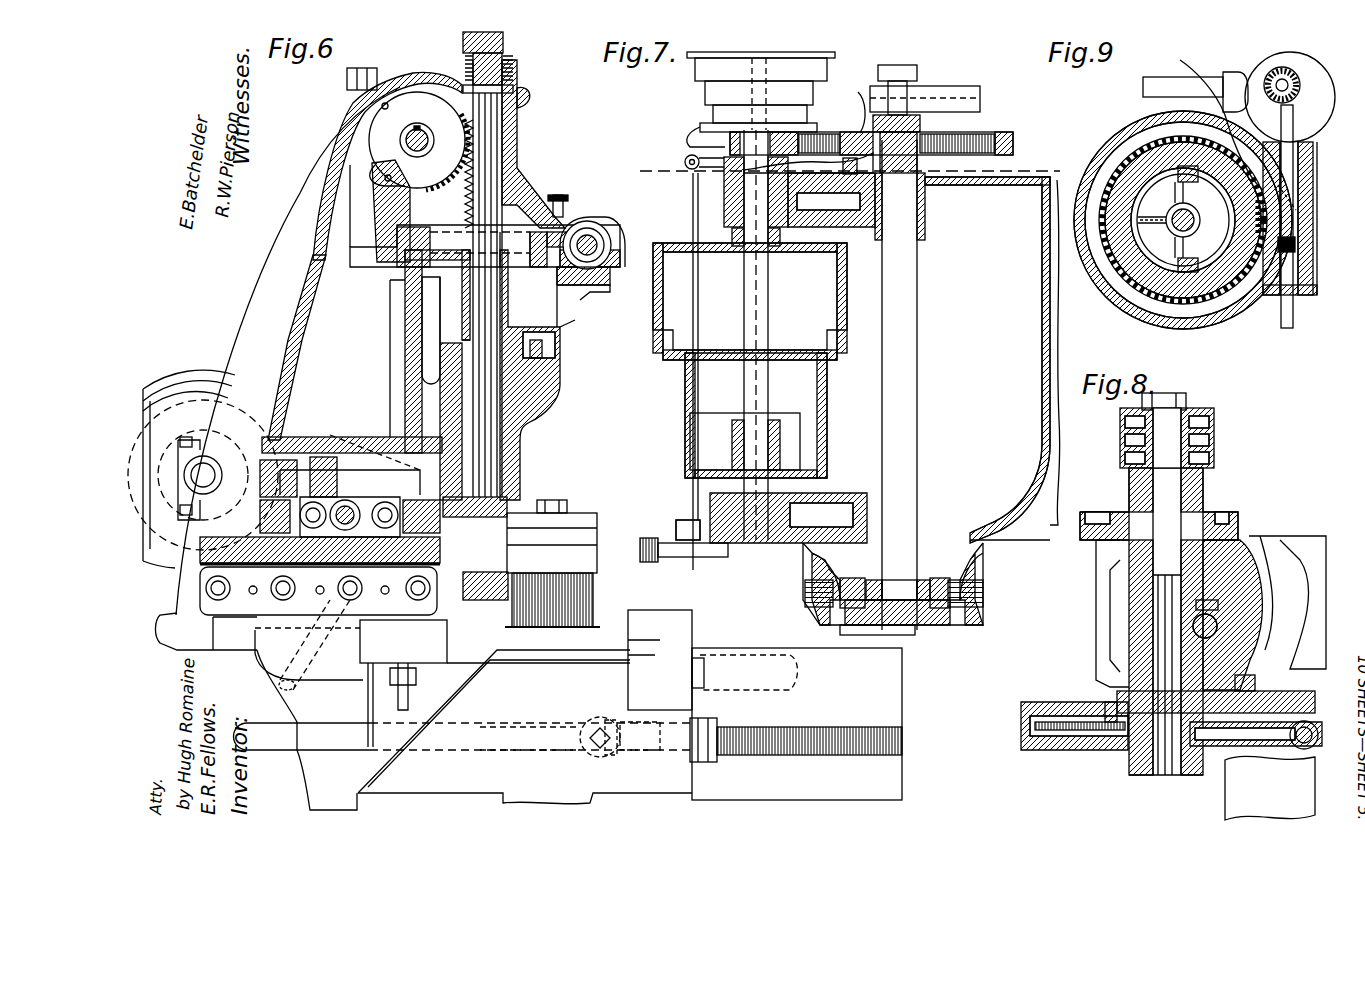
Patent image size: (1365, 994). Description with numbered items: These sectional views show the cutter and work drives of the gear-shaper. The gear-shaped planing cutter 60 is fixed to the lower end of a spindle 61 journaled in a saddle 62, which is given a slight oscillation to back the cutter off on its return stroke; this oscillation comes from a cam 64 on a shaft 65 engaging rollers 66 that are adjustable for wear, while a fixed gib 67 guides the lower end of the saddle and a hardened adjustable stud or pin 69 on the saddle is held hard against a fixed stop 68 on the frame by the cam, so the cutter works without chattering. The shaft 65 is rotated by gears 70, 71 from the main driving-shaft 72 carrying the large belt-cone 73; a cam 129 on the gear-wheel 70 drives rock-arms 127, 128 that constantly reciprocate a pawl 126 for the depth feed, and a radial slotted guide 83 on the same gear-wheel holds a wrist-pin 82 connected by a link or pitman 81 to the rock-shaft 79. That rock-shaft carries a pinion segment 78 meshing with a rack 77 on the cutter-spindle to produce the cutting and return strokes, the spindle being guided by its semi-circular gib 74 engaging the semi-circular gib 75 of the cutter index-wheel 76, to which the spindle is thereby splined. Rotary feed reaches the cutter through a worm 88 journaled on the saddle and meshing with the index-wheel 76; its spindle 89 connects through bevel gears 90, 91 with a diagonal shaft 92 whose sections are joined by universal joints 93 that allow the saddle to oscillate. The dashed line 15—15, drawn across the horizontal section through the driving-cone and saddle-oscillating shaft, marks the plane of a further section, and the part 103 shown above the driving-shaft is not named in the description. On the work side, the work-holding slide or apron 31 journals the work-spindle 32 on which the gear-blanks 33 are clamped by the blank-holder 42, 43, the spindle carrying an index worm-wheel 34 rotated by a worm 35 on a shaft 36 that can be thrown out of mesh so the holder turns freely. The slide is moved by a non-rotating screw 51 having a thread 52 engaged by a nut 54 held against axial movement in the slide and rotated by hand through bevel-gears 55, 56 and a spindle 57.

In FIG. 7, the section line 15 is at (652, 163).
In FIG. 6, the work-holding slide or apron 31 is at (660, 625).
In FIG. 8, the work-holding slide or apron 31 is at (1098, 622).
In FIG. 8, the work-spindle 32 is at (1170, 520).
In FIG. 6, the gear-blanks 33 is at (595, 520).
In FIG. 8, the gear-blanks 33 is at (1212, 428).
In FIG. 8, the index worm-wheel 34 is at (1055, 738).
In FIG. 8, the worm 35 is at (1304, 752).
In FIG. 8, the shaft 36 is at (1300, 715).
In FIG. 8, the blank-holder 42 is at (1128, 488).
In FIG. 6, the blank-holder 43 is at (552, 498).
In FIG. 8, the blank-holder 43 is at (1178, 396).
In FIG. 6, the non-rotating screw 51 is at (293, 748).
In FIG. 6, the thread 52 is at (800, 752).
In FIG. 6, the nut 54 is at (650, 760).
In FIG. 6, the bevel-gear 55 is at (616, 718).
In FIG. 6, the bevel-gear 56 is at (590, 728).
In FIG. 6, the spindle 57 is at (592, 748).
In FIG. 6, the gear-shaped planing cutter 60 is at (560, 553).
In FIG. 6, the cutter-spindle 61 is at (520, 445).
In FIG. 6, the saddle 62 is at (252, 290).
In FIG. 6, the cam 64 is at (355, 500).
In FIG. 6, the shaft 65 is at (343, 500).
In FIG. 7, the shaft 65 is at (900, 337).
In FIG. 6, the rollers 66 is at (325, 540).
In FIG. 7, the rollers 66 is at (805, 588).
In FIG. 6, the fixed gib 67 is at (440, 585).
In FIG. 6, the fixed stop 68 is at (300, 440).
In FIG. 6, the adjustable stud or pin 69 is at (283, 355).
In FIG. 7, the gear 70 is at (990, 132).
In FIG. 7, the gear 71 is at (698, 128).
In FIG. 7, the main driving-shaft 72 is at (745, 272).
In FIG. 7, the belt-cone 73 is at (683, 385).
In FIG. 6, the semi-circular gib 74 is at (445, 298).
In FIG. 9, the semi-circular gib 74 is at (1130, 258).
In FIG. 6, the semi-circular gib 75 is at (520, 228).
In FIG. 9, the semi-circular gib 75 is at (1205, 250).
In FIG. 6, the cutter index-wheel 76 is at (395, 232).
In FIG. 9, the cutter index-wheel 76 is at (1115, 170).
In FIG. 6, the rack 77 is at (462, 206).
In FIG. 6, the pinion segment 78 is at (393, 164).
In FIG. 6, the rock-shaft 79 is at (405, 125).
In FIG. 7, the link or pitman 81 is at (962, 92).
In FIG. 7, the wrist-pin 82 is at (900, 66).
In FIG. 7, the radial slotted guide 83 is at (905, 122).
In FIG. 6, the worm 88 is at (612, 215).
In FIG. 9, the worm 88 is at (1262, 300).
In FIG. 6, the spindle 89 is at (580, 210).
In FIG. 9, the spindle 89 is at (1219, 118).
In FIG. 9, the bevel gear 90 is at (1312, 105).
In FIG. 9, the bevel gear 91 is at (1265, 72).
In FIG. 6, the diagonal shaft 92 is at (405, 385).
In FIG. 9, the diagonal shaft 92 is at (1140, 87).
In FIG. 6, the universal joints 93 is at (552, 347).
In FIG. 7, the pulley 103 is at (712, 68).
In FIG. 7, the pawl 126 is at (692, 208).
In FIG. 7, the rock-arm 127 is at (688, 168).
In FIG. 7, the rock-arm 128 is at (823, 160).
In FIG. 7, the cam 129 is at (848, 98).